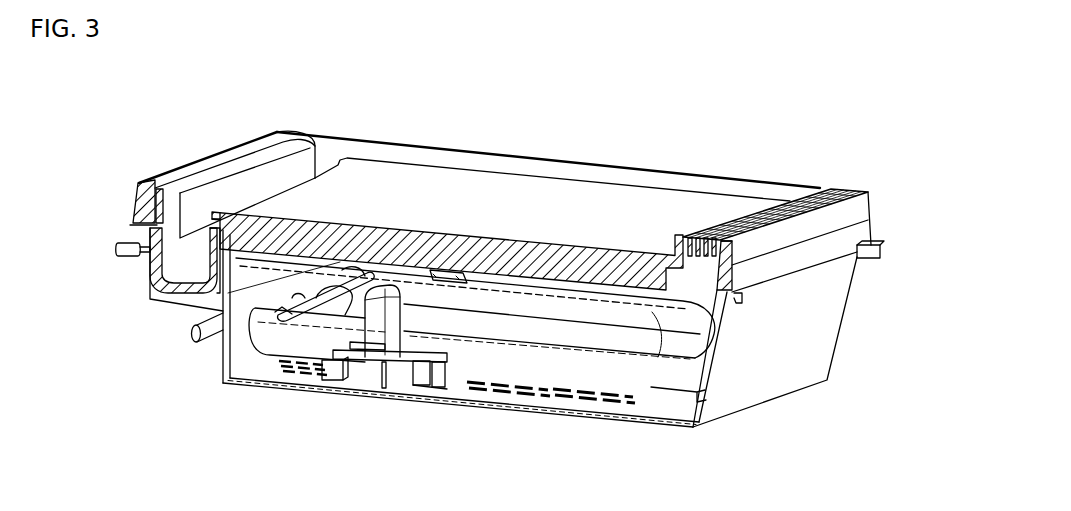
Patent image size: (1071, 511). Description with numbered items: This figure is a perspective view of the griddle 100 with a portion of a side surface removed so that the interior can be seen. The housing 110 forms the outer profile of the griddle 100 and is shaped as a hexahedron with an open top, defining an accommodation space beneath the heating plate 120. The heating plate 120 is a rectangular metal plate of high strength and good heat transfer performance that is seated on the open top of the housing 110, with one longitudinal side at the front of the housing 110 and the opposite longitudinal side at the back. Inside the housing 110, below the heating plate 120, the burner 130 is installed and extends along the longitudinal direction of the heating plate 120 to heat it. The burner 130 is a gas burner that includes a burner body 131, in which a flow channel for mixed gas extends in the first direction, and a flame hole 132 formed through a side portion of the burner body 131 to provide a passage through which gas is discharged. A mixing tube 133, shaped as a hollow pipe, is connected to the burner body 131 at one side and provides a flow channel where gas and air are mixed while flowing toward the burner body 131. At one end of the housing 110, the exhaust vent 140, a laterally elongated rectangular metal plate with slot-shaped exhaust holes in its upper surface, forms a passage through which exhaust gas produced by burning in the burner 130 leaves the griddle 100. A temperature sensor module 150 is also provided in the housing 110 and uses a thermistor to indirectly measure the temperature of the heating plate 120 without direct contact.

The griddle 100 is at (866, 129).
The housing 110 is at (808, 327).
The heating plate 120 is at (486, 197).
The burner 130 is at (630, 374).
The burner body 131 is at (503, 360).
The flame hole 132 is at (592, 358).
The mixing tube 133 is at (410, 318).
The exhaust vent 140 is at (788, 191).
The temperature sensor module 150 is at (389, 284).